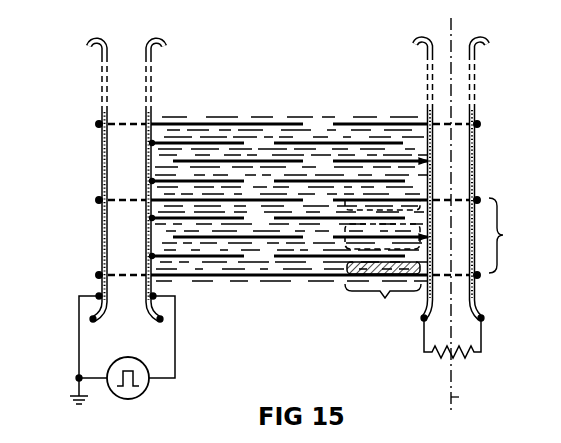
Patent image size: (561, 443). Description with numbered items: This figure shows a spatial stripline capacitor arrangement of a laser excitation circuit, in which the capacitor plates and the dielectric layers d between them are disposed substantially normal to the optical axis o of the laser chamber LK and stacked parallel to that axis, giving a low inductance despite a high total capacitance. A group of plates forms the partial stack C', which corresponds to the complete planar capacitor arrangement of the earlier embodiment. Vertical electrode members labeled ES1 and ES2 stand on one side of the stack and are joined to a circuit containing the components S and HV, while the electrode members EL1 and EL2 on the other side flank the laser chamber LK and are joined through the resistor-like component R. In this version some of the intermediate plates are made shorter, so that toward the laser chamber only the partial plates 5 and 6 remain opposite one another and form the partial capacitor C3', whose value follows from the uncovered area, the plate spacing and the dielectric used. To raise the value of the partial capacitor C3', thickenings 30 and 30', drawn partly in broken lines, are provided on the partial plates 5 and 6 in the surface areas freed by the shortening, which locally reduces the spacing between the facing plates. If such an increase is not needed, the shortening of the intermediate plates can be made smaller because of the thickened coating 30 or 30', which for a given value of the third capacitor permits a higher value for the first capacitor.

The first storage electrode ES1 is at (102, 53).
The second storage electrode ES2 is at (151, 53).
The first load electrode EL1 is at (426, 52).
The second load electrode EL2 is at (476, 52).
The dielectric layer d is at (416, 165).
The partial stack C' is at (507, 235).
The thickening 30 is at (440, 287).
The partial plate 5 is at (352, 243).
The thickening 30' is at (319, 302).
The partial plate 6 is at (346, 282).
The partial capacitor C3' is at (383, 306).
The pulse source S is at (122, 348).
The high voltage supply HV is at (143, 393).
The laser chamber LK is at (452, 337).
The load resistor R is at (436, 358).
The optical axis o is at (460, 399).